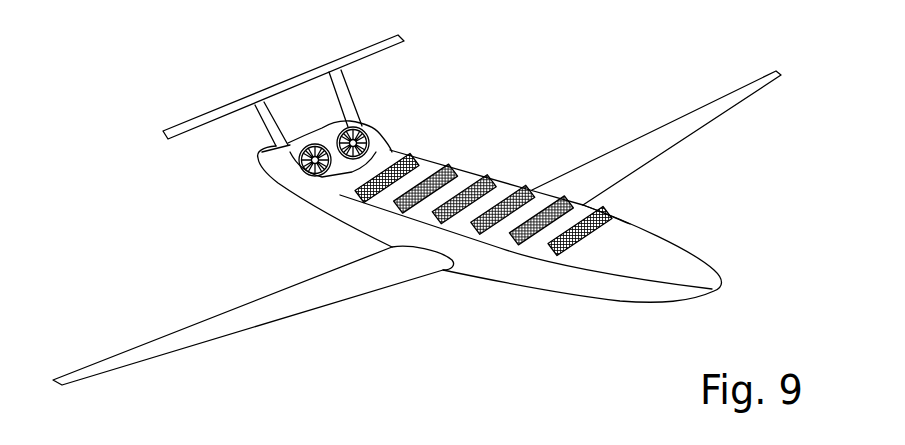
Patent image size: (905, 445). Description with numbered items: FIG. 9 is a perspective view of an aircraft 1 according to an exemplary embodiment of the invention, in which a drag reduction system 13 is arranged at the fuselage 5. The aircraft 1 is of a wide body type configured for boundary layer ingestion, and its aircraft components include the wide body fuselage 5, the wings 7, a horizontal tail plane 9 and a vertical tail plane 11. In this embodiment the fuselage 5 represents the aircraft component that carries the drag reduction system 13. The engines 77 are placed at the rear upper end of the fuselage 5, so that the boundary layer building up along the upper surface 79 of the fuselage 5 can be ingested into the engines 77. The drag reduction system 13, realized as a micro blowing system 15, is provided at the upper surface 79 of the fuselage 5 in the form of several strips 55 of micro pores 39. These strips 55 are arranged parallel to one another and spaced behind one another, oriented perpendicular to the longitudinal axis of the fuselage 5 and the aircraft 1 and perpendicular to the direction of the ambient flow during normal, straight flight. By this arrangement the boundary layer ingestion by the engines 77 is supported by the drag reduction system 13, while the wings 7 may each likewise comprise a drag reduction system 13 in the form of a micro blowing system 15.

The aircraft 1 is at (156, 85).
The fuselage 5 is at (493, 266).
The wing 7 is at (347, 287).
The horizontal tail plane 9 is at (293, 84).
The vertical tail plane 11 is at (268, 128).
The drag reduction system 13 is at (674, 195).
The micro blowing system 15 is at (620, 193).
The micro pores 39 is at (483, 164).
The strips of micro pores 55 is at (473, 181).
The engines 77 is at (331, 133).
The upper surface 79 is at (607, 243).